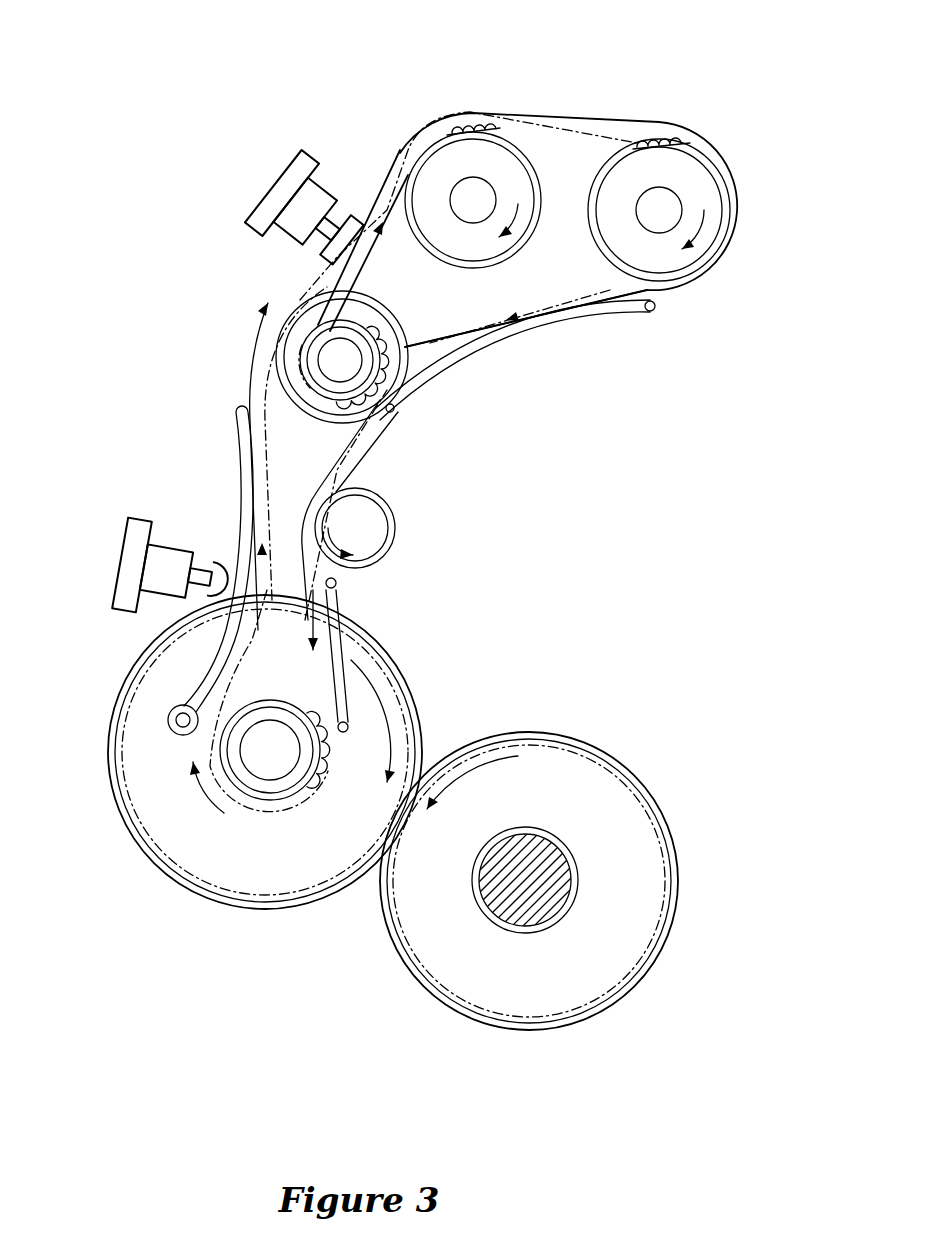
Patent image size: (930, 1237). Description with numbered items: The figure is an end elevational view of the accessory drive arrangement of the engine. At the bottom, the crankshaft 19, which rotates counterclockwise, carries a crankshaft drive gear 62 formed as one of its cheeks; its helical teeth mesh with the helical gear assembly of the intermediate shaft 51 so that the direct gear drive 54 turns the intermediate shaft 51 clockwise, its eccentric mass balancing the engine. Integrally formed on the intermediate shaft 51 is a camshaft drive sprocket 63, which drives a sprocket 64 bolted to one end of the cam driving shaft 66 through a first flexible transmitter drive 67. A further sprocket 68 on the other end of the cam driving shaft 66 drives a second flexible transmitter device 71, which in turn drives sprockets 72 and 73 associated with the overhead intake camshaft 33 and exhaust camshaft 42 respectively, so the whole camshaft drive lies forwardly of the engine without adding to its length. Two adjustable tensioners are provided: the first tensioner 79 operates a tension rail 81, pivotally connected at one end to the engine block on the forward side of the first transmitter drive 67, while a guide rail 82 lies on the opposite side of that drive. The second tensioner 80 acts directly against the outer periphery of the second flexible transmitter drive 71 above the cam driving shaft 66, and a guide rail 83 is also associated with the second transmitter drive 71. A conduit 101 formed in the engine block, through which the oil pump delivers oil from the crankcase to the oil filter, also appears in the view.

The crankshaft 19 is at (520, 920).
The intake camshaft 33 is at (455, 215).
The exhaust camshaft 42 is at (682, 197).
The intermediate shaft 51 is at (267, 733).
The direct gear drive 54 is at (165, 867).
The crankshaft drive gear 62 is at (643, 790).
The camshaft drive sprocket 63 is at (270, 797).
The sprocket 64 is at (383, 340).
The cam driving shaft 66 is at (327, 367).
The first flexible transmitter drive 67 is at (367, 457).
The sprocket 68 is at (324, 403).
The second flexible transmitter device 71 is at (580, 121).
The sprocket 72 is at (523, 252).
The sprocket 73 is at (600, 163).
The first tensioner 79 is at (127, 565).
The second tensioner 80 is at (273, 193).
The tension rail 81 is at (237, 475).
The guide rail 82 is at (337, 597).
The guide rail 83 is at (530, 333).
The conduit 101 is at (400, 523).